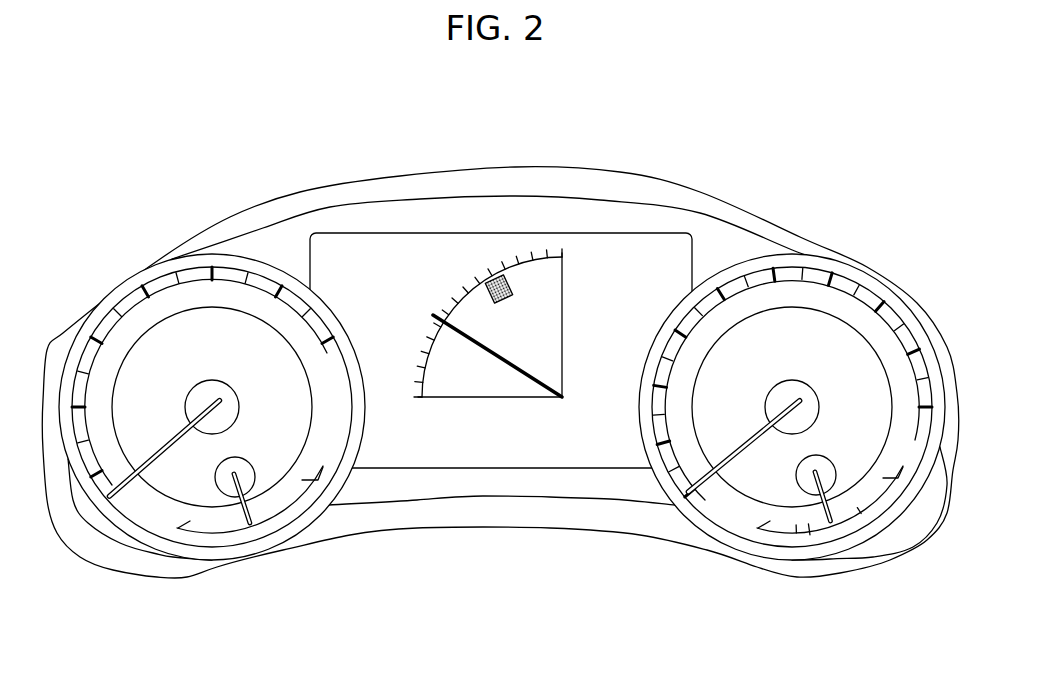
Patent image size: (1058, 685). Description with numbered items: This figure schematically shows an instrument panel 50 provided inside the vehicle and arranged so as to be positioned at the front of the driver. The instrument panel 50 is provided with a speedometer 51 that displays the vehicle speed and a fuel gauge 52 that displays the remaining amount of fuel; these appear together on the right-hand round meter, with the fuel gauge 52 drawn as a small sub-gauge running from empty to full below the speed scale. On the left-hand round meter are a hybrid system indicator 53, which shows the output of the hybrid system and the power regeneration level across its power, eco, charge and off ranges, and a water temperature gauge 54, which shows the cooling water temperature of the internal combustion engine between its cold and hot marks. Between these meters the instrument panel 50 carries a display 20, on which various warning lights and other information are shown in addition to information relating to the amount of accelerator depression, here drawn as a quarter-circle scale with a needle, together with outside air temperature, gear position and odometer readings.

The instrument panel 50 is at (414, 164).
The display 20 is at (362, 253).
The hybrid system indicator 53 is at (167, 307).
The water temperature gauge 54 is at (270, 507).
The speedometer 51 is at (866, 302).
The fuel gauge 52 is at (818, 523).